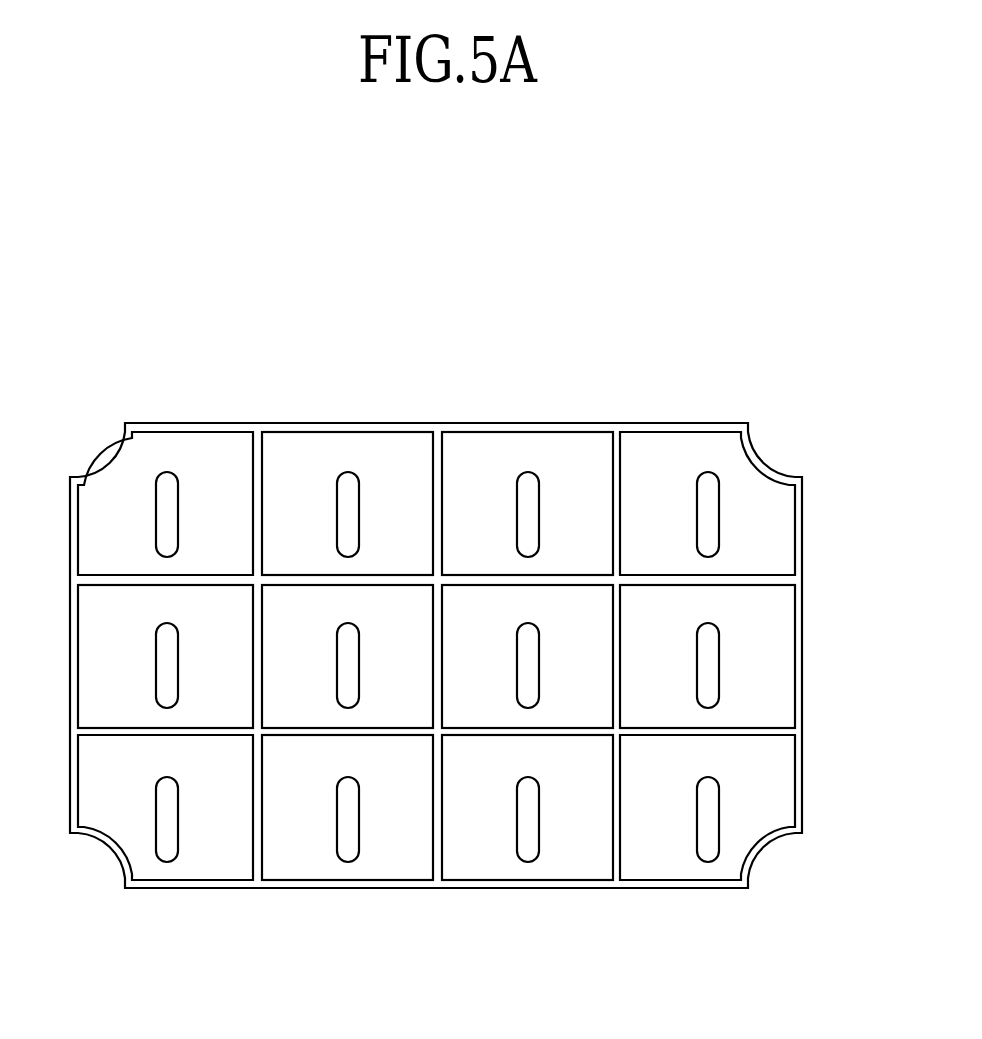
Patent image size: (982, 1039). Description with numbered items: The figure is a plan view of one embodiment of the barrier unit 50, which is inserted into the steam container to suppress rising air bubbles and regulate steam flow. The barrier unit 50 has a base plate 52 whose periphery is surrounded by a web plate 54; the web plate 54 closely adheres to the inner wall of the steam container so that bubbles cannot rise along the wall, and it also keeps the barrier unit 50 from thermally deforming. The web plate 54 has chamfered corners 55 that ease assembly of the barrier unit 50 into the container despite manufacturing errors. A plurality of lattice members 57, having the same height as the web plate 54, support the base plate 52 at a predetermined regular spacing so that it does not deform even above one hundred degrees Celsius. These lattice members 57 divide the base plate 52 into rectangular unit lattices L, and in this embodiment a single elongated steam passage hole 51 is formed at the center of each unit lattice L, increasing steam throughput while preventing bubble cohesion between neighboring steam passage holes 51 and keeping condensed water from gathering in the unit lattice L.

The barrier unit 50 is at (658, 419).
The steam passage hole 51 is at (167, 503).
The base plate 52 is at (572, 457).
The web plate 54 is at (400, 433).
The chamfered corner 55 is at (763, 467).
The lattice member 57 is at (473, 575).
The unit lattice L is at (308, 642).